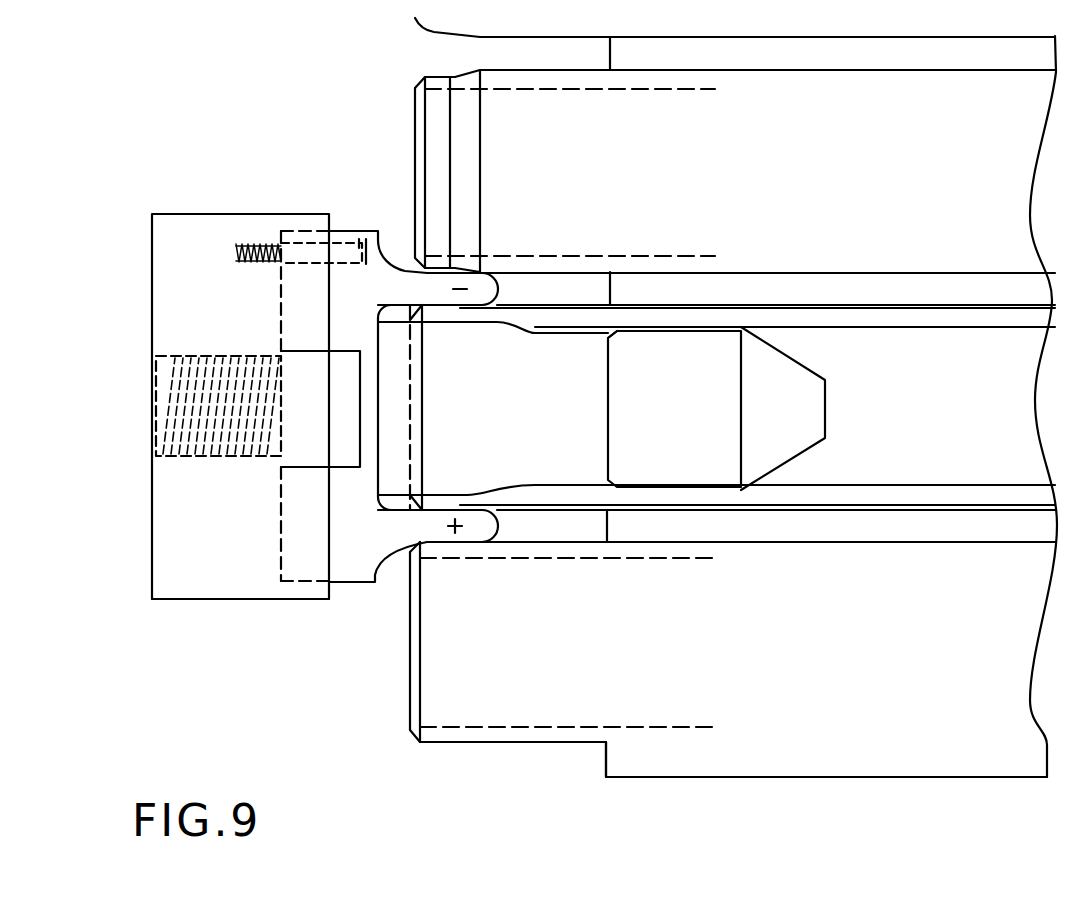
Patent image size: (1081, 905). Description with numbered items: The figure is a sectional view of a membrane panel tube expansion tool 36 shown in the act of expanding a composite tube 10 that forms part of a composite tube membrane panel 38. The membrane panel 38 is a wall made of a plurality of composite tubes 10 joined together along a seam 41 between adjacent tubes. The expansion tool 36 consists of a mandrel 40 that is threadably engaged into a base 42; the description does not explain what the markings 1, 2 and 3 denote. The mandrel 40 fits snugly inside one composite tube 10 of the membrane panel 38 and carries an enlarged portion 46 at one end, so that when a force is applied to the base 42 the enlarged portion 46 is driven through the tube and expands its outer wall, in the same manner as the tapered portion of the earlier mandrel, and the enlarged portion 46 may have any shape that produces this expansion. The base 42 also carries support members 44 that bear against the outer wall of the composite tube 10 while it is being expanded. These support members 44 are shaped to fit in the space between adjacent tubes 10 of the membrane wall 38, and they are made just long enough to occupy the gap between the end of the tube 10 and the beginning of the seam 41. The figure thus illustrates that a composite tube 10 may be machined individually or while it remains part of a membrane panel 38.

The first section of control module 1 is at (206, 538).
The second section of control module 2 is at (349, 538).
The battery cell 3 is at (758, 409).
The composite tube 10 is at (477, 70).
The membrane panel tube expansion tool 36 is at (306, 196).
The composite tube membrane panel 38 is at (583, 760).
The mandrel 40 is at (816, 371).
The seam 41 is at (608, 61).
The base 42 is at (208, 600).
The support members 44 is at (498, 291).
The enlarged portion 46 is at (472, 324).